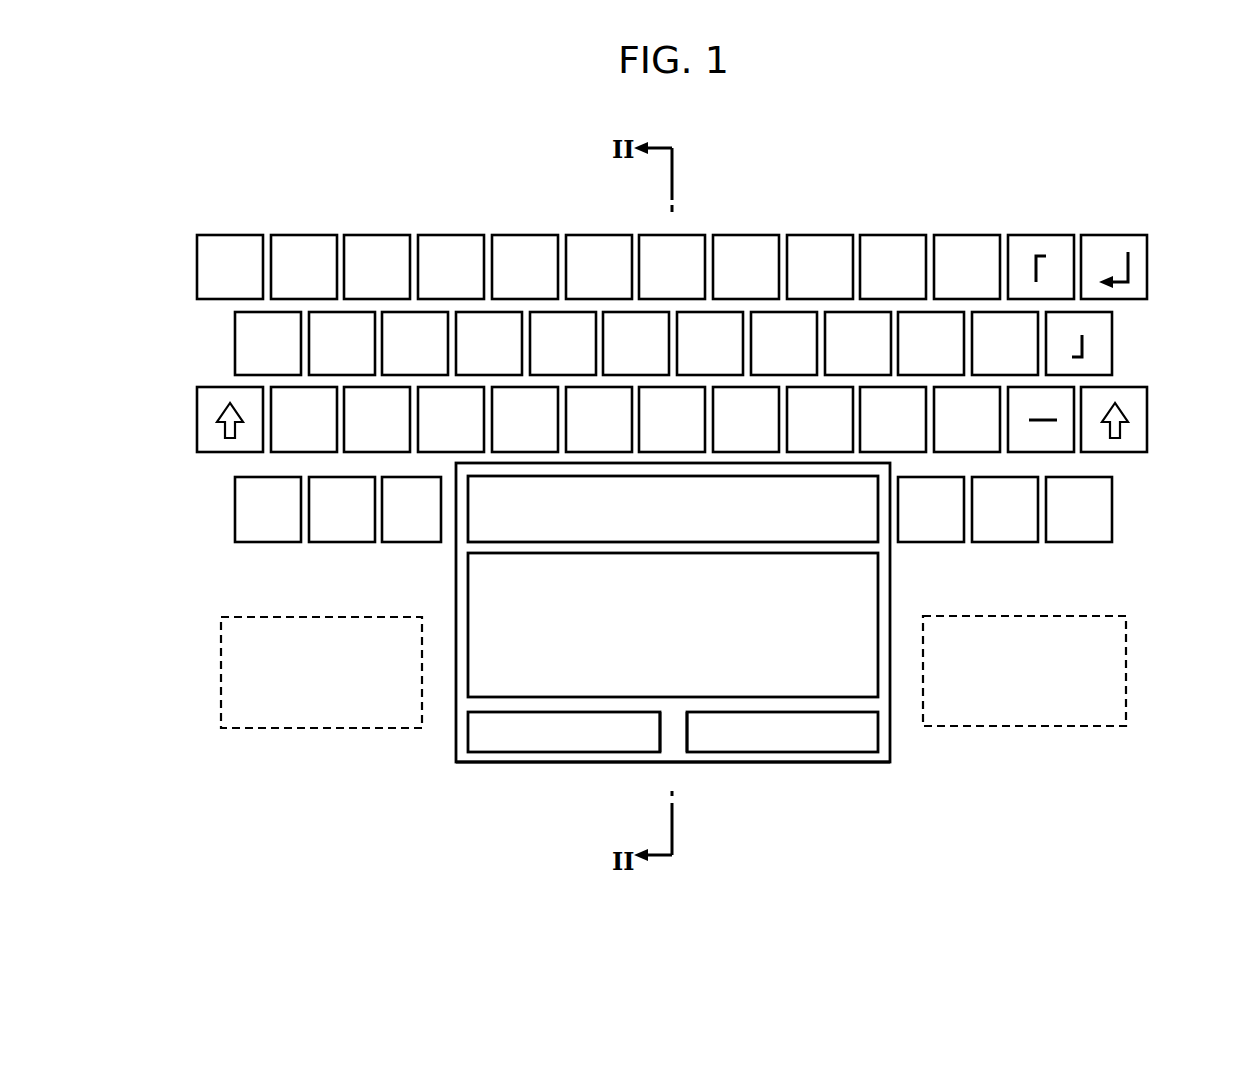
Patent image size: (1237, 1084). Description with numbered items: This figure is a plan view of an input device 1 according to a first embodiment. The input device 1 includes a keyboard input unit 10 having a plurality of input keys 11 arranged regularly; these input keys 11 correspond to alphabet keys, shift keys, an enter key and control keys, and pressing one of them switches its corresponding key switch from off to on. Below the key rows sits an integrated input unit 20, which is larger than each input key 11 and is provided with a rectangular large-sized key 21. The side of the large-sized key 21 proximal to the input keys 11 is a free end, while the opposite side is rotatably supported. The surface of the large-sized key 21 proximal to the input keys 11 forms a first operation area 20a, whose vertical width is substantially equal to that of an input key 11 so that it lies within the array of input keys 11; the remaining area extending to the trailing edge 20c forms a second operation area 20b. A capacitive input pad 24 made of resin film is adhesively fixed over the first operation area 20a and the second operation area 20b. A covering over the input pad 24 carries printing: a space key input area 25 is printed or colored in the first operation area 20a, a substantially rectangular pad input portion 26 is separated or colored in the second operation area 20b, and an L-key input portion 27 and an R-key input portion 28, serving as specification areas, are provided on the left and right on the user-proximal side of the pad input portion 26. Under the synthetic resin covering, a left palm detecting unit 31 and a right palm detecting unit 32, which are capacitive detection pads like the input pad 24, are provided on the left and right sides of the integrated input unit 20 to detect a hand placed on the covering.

The input device 1 is at (971, 186).
The keyboard input unit 10 is at (1178, 233).
The input keys 11 is at (822, 237).
The integrated input unit 20 is at (462, 778).
The first operation area 20a is at (447, 463).
The second operation area 20b is at (447, 553).
The trailing edge 20c is at (574, 763).
The large-sized key 21 is at (883, 750).
The capacitive input pad 24 is at (670, 747).
The space key input area 25 is at (673, 530).
The pad input portion 26 is at (865, 583).
The L-key input portion 27 is at (512, 740).
The R-key input portion 28 is at (773, 740).
The left palm detecting unit 31 is at (285, 728).
The right palm detecting unit 32 is at (1018, 726).